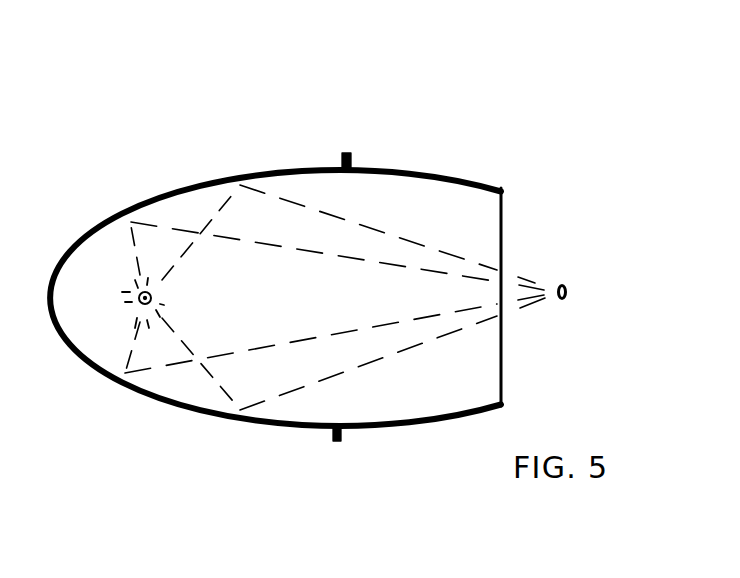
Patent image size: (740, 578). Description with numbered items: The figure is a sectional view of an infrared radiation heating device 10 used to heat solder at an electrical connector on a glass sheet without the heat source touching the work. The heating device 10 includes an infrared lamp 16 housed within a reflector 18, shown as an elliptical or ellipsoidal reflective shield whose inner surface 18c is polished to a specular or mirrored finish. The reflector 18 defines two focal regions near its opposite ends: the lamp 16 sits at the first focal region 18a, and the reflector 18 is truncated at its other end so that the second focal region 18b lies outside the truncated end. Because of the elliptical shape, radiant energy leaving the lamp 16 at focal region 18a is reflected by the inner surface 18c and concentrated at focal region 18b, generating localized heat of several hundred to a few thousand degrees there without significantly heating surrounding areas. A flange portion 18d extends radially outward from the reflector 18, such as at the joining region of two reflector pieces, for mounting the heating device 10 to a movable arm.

The infrared radiation heating device 10 is at (127, 144).
The infrared lamp 16 is at (139, 303).
The reflector 18 is at (180, 408).
The focal region 18a is at (155, 295).
The focal region 18b is at (568, 291).
The inner surface 18c is at (477, 188).
The flange portion 18d is at (348, 153).